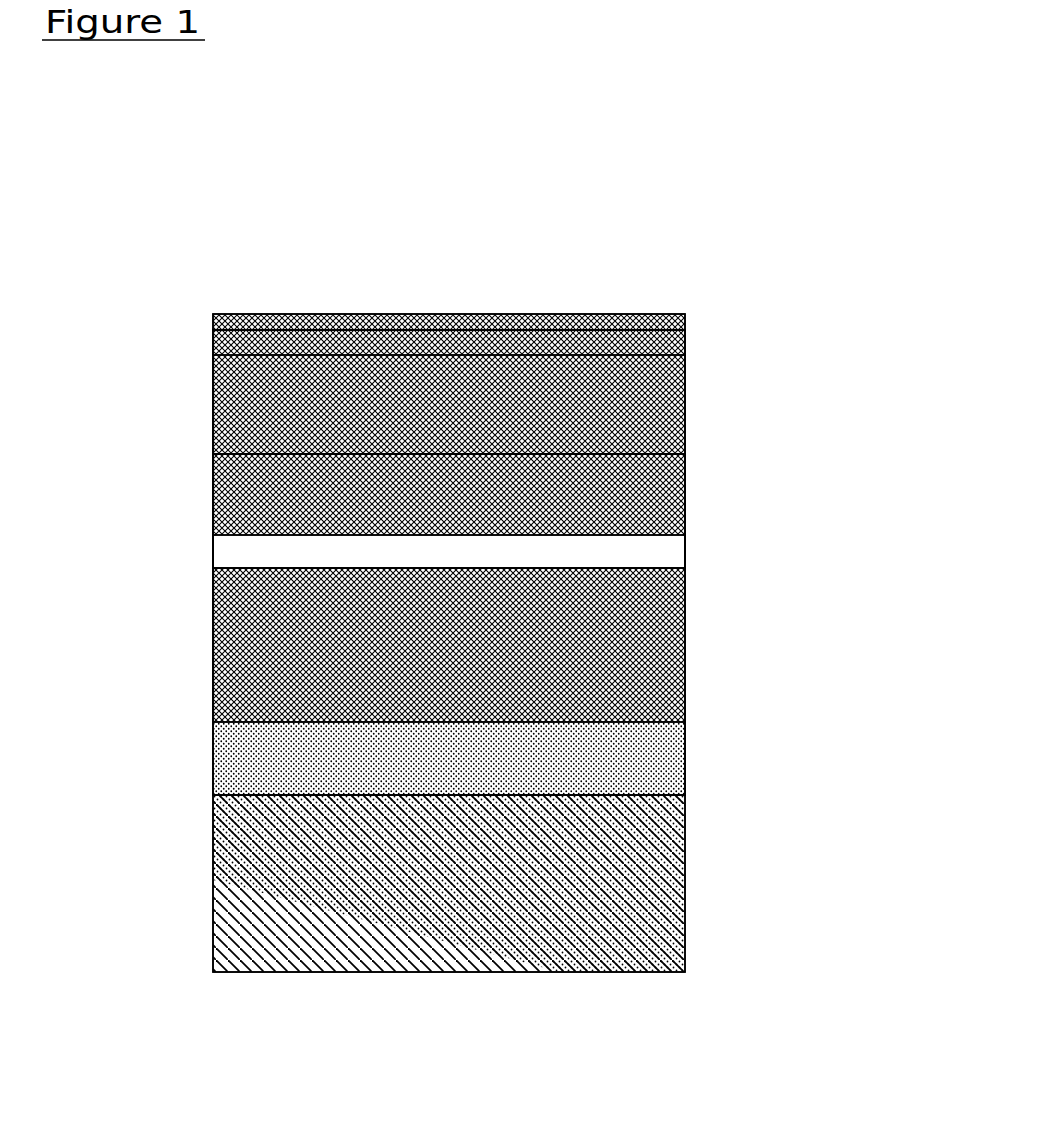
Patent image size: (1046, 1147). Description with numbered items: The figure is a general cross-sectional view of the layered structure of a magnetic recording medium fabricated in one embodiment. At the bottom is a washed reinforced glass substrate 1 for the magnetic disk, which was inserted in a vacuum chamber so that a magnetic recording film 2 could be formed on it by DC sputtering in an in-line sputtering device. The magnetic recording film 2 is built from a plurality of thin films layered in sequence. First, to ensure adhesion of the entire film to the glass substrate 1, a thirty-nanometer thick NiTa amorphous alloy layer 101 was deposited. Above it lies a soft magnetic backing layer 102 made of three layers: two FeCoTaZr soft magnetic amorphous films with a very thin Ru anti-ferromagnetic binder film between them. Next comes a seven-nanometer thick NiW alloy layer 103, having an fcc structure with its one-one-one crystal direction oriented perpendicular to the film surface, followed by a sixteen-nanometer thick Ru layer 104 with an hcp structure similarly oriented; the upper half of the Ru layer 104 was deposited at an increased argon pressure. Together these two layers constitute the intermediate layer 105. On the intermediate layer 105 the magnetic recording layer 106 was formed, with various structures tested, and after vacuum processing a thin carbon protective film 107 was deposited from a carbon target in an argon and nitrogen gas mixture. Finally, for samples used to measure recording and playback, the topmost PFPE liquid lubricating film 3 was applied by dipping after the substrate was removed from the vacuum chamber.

The glass substrate 1 is at (208, 893).
The magnetic recording film 2 is at (200, 795).
The liquid lubricating film 3 is at (212, 322).
The NiTa amorphous alloy layer 101 is at (688, 760).
The soft magnetic backing layer 102 is at (688, 652).
The NiW alloy layer 103 is at (688, 553).
The Ru layer 104 is at (688, 494).
The intermediate layer 105 is at (825, 460).
The magnetic recording layer 106 is at (688, 425).
The protective film 107 is at (685, 343).